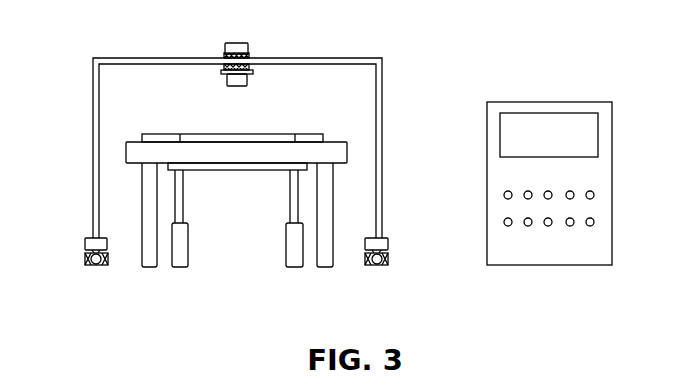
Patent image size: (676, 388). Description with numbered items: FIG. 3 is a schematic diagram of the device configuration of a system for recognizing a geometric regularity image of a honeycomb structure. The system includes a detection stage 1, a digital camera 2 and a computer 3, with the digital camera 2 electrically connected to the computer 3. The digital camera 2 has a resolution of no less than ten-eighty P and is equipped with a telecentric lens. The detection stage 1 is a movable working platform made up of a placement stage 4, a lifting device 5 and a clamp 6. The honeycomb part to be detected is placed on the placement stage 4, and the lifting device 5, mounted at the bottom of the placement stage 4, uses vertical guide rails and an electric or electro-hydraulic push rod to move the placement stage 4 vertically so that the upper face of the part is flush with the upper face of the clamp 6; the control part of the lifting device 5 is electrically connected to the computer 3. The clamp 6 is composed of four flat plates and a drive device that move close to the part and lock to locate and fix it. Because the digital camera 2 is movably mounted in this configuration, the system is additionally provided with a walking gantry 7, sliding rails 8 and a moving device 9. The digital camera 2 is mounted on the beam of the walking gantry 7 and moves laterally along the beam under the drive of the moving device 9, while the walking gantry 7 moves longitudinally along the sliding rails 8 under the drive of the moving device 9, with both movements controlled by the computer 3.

The detection stage 1 is at (305, 167).
The digital camera 2 is at (242, 82).
The computer 3 is at (605, 178).
The placement stage 4 is at (343, 152).
The lifting device 5 is at (183, 253).
The clamp 6 is at (328, 135).
The walking gantry 7 is at (93, 92).
The sliding rails 8 is at (393, 258).
The moving device 9 is at (388, 238).